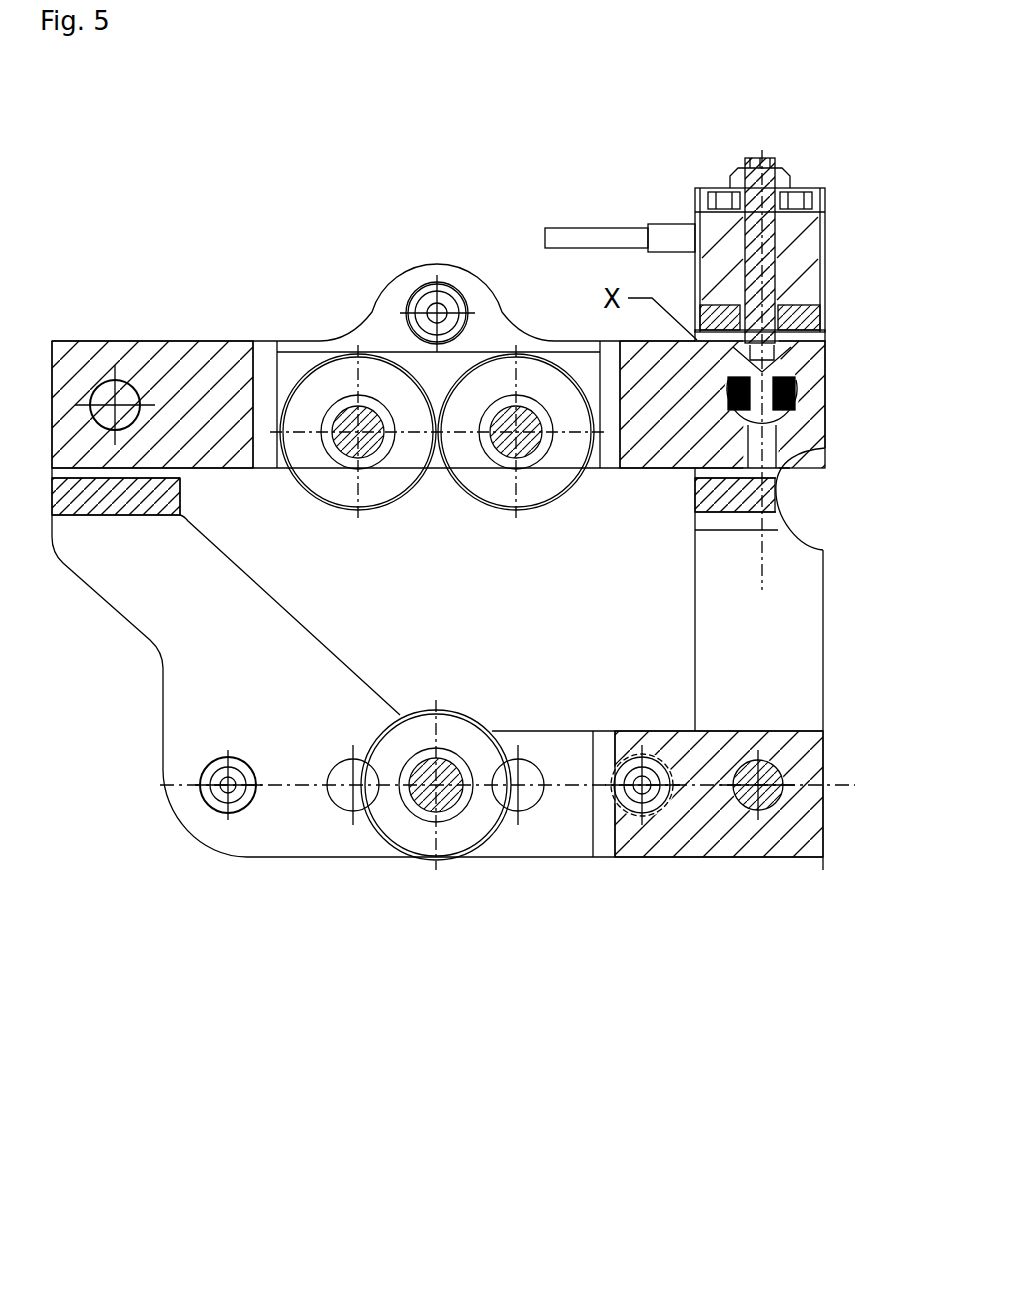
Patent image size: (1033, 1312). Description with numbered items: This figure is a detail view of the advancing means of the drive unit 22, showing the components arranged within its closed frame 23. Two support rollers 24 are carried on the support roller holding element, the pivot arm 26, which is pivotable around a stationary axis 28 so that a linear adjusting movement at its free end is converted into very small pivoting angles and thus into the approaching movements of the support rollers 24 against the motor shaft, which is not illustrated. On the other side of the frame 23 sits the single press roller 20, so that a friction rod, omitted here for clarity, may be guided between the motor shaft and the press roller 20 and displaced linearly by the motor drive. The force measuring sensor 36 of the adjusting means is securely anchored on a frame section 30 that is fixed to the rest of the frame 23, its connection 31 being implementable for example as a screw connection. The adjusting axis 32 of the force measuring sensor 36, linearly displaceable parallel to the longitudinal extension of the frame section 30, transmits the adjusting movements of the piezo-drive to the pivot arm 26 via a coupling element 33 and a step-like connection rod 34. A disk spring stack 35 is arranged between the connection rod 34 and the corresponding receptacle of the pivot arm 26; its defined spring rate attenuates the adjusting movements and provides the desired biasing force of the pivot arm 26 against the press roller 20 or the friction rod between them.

The press roller 20 is at (483, 758).
The drive unit 22 is at (345, 962).
The frame 23 is at (198, 725).
The support rollers 24 is at (378, 477).
The pivot arm 26 is at (213, 387).
The stationary axis 28 is at (100, 393).
The frame section 30 is at (758, 587).
The connection 31 is at (780, 767).
The adjusting axis 32 is at (757, 258).
The coupling element 33 is at (793, 353).
The connection rod 34 is at (767, 432).
The disk spring stack 35 is at (797, 392).
The force measuring sensor 36 is at (783, 232).